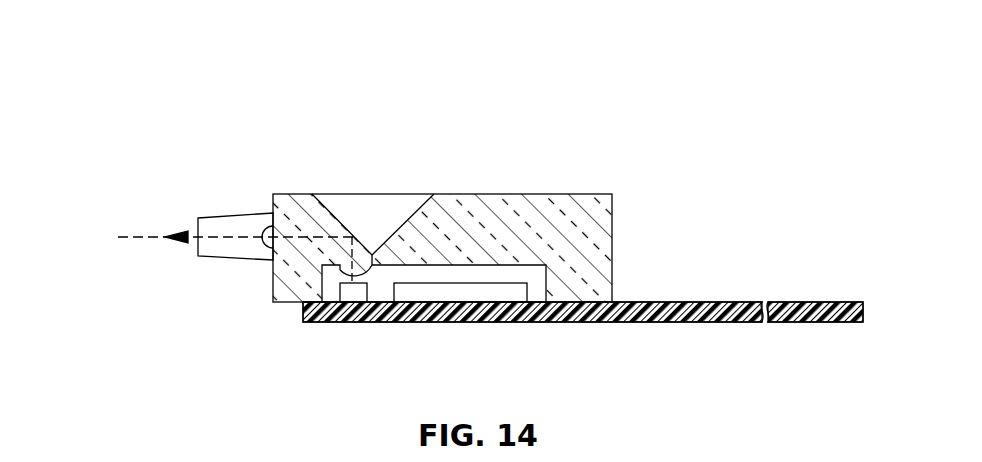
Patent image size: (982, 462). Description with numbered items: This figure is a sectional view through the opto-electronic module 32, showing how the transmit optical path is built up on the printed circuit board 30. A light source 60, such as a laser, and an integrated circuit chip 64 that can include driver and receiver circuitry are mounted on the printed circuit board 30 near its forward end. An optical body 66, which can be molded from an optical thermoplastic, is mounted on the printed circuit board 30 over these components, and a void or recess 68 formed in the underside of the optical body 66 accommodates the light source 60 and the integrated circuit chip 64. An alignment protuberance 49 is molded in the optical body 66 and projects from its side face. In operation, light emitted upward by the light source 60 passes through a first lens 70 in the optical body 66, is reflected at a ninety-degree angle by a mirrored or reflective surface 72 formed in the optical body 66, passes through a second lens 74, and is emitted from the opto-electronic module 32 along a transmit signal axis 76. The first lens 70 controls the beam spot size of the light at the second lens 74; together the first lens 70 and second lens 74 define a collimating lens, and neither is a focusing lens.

The printed circuit board 30 is at (690, 302).
The opto-electronic module 32 is at (616, 94).
The alignment protuberances 49 is at (214, 215).
The light source 60 is at (367, 293).
The integrated circuit chip 64 is at (481, 303).
The optical body 66 is at (452, 194).
The recess 68 is at (534, 277).
The first lens 70 is at (337, 268).
The reflective surface 72 is at (336, 194).
The second lens 74 is at (268, 227).
The transmit signal axis 76 is at (152, 237).